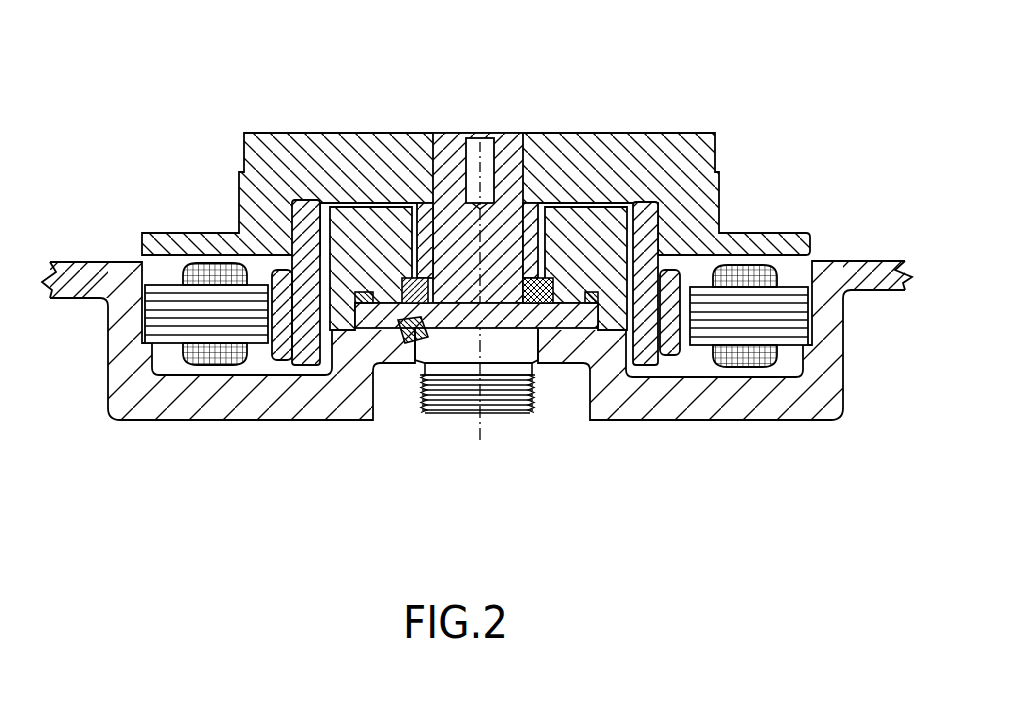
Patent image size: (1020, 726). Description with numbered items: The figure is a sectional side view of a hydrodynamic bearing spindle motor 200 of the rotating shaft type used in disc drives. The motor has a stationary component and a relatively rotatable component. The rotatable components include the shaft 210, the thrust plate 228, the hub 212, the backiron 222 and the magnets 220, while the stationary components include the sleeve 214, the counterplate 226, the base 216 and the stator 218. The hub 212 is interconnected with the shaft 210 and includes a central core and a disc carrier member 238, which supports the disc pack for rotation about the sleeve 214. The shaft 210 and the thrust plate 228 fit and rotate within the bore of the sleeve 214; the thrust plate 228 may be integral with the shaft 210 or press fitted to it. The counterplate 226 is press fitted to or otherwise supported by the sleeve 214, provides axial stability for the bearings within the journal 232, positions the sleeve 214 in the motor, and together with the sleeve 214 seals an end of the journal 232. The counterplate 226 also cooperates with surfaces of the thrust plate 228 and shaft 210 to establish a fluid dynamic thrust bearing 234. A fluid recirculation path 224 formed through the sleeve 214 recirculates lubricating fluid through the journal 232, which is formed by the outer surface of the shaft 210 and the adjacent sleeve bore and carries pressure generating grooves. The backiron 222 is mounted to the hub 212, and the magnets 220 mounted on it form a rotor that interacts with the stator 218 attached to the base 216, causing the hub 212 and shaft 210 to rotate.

The hydrodynamic bearing spindle motor 200 is at (477, 264).
The shaft 210 is at (478, 252).
The hub 212 is at (547, 150).
The sleeve 214 is at (587, 248).
The base 216 is at (803, 407).
The stator 218 is at (779, 307).
The magnets 220 is at (673, 357).
The backiron 222 is at (656, 231).
The fluid recirculation path 224 is at (542, 235).
The counterplate 226 is at (568, 303).
The thrust plate 228 is at (541, 303).
The journal 232 is at (502, 142).
The fluid dynamic thrust bearing 234 is at (513, 328).
The disc carrier member 238 is at (715, 222).